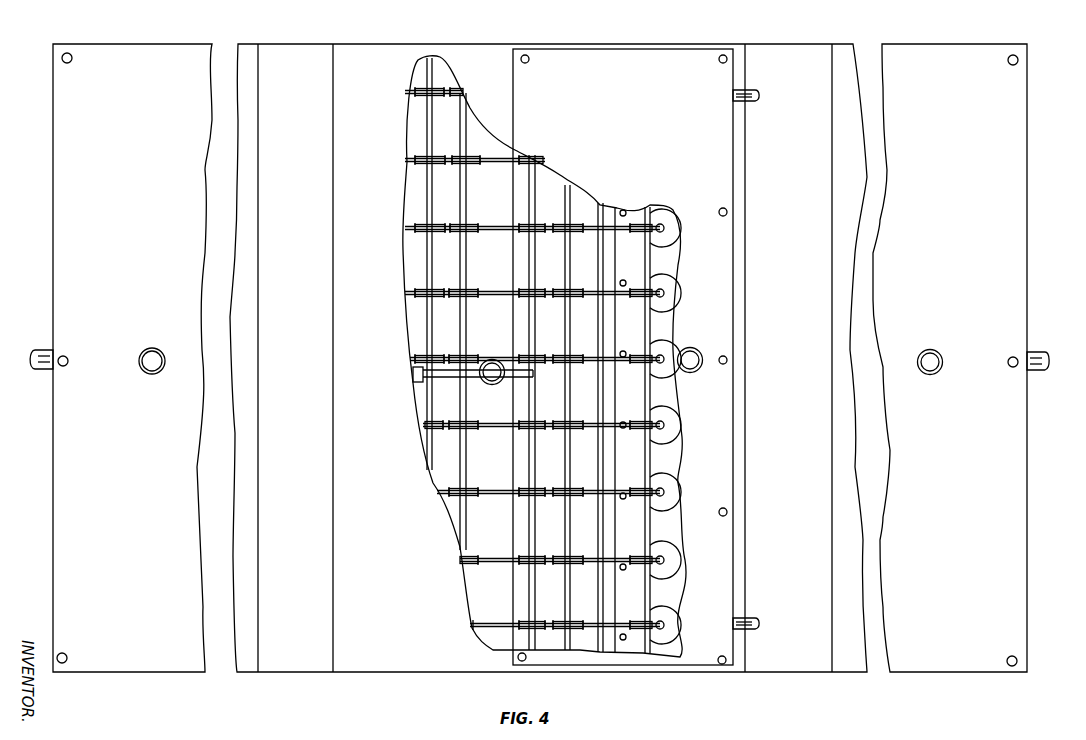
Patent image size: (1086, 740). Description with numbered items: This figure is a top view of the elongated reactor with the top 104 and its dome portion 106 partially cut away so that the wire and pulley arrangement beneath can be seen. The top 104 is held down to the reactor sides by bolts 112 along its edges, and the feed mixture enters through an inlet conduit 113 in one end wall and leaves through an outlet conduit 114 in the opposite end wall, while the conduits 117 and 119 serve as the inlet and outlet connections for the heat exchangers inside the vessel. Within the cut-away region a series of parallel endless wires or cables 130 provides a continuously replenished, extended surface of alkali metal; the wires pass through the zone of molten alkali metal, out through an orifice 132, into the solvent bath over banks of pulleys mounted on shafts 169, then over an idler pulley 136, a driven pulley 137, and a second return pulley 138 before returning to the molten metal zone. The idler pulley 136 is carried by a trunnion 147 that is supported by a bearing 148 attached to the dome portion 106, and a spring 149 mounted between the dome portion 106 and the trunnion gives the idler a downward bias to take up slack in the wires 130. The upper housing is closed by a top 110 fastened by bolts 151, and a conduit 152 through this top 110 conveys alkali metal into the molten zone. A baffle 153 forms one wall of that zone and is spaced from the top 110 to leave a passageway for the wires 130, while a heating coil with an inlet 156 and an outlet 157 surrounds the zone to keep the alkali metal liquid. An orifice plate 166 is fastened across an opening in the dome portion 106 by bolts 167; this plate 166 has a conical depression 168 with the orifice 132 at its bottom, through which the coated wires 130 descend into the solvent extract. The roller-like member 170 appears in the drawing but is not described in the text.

The top 104 is at (132, 358).
The dome portion 106 is at (548, 358).
The top 110 is at (688, 58).
The bolts 112 is at (1019, 60).
The inlet conduit 113 is at (42, 350).
The outlet conduit 114 is at (1040, 354).
The inlet and outlet conduit 117 is at (156, 350).
The inlet and outlet conduit 119 is at (938, 354).
The endless wire or cable 130 is at (486, 229).
The orifice 132 is at (668, 489).
The idler pulley 136 is at (522, 622).
The driven pulley 137 is at (558, 622).
The second return pulley 138 is at (663, 613).
The trunnion 147 is at (510, 370).
The bearing 148 is at (413, 371).
The spring 149 is at (490, 385).
The bolts 151 is at (528, 56).
The conduit 152 is at (694, 350).
The baffle 153 is at (603, 210).
The inlet 156 is at (756, 93).
The outlet 157 is at (753, 621).
The orifice plate 166 is at (614, 209).
The bolts 167 is at (627, 212).
The conical depression 168 is at (667, 483).
The shafts 169 is at (468, 197).
The roller 170 is at (656, 259).